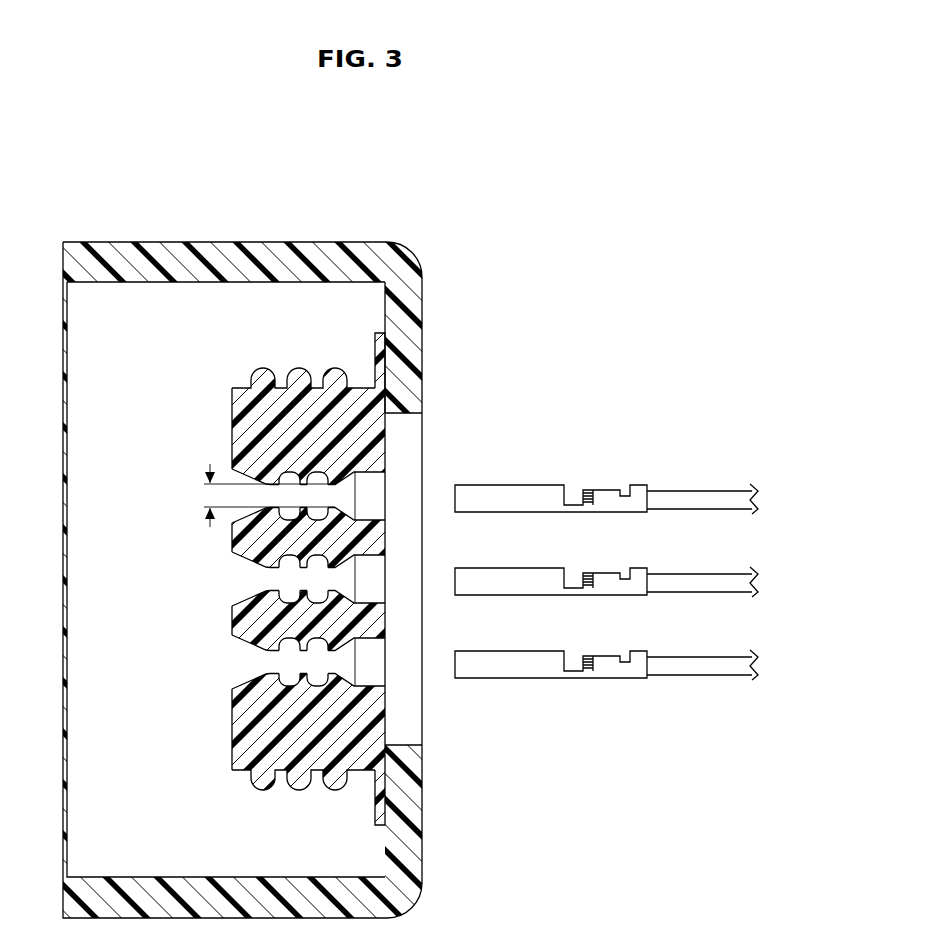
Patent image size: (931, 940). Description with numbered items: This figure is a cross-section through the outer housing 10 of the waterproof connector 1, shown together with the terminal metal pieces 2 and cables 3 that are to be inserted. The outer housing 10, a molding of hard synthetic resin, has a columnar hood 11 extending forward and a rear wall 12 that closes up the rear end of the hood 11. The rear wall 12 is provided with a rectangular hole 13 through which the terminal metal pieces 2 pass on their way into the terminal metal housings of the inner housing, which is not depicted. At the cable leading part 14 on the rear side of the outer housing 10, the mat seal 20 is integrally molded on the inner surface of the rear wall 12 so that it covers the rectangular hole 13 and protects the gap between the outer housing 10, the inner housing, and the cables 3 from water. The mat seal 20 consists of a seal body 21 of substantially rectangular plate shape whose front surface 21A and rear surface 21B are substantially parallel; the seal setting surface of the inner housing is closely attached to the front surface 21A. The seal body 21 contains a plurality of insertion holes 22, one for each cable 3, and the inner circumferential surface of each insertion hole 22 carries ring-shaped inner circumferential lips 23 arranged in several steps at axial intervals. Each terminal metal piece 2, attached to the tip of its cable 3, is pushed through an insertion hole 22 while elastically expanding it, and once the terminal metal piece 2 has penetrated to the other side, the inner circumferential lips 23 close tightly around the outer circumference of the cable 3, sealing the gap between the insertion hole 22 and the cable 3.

The waterproof connector 1 is at (172, 232).
The outer housing 10 is at (372, 241).
The hood 11 is at (308, 250).
The rear wall 12 is at (420, 340).
The rectangular hole 13 is at (412, 424).
The cable leading part 14 is at (372, 306).
The mat seal 20 is at (252, 364).
The seal body 21 is at (272, 723).
The front surface 21A is at (230, 537).
The rear surface 21B is at (387, 621).
The insertion hole 22 is at (240, 677).
The inner circumferential lip 23 is at (314, 665).
The terminal metal piece 2 is at (545, 497).
The cable 3 is at (717, 497).